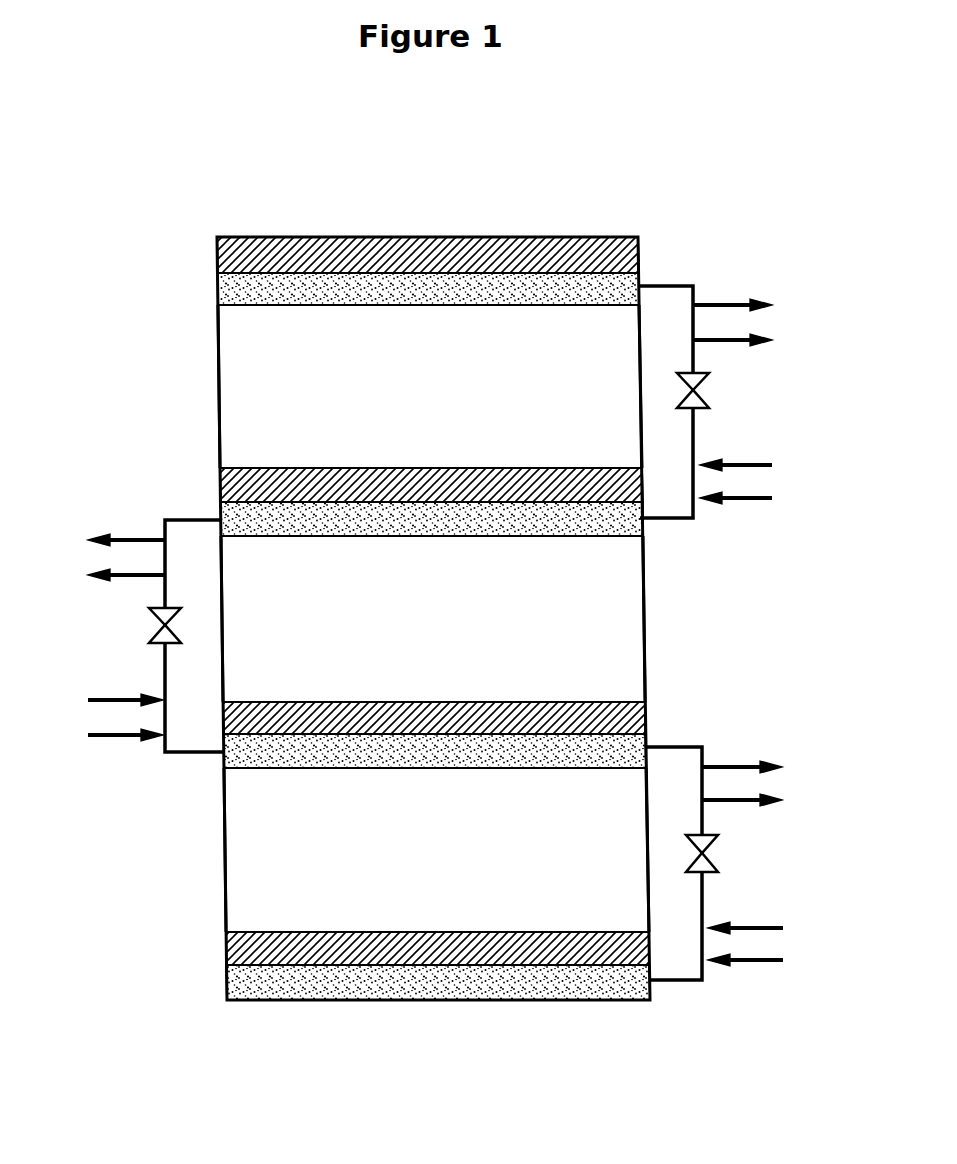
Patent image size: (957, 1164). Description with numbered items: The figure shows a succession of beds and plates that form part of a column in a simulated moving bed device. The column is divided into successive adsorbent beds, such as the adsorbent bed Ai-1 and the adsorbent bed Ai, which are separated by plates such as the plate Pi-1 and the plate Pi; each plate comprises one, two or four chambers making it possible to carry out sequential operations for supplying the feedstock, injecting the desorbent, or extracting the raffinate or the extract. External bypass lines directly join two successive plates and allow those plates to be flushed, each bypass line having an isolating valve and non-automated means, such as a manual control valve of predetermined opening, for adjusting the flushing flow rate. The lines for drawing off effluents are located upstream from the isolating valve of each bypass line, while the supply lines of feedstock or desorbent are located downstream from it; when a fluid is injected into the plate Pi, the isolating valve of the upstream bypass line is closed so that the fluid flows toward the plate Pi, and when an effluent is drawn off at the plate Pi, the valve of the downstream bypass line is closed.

The plate Pi-1 is at (428, 271).
The adsorbent bed Ai-1 is at (430, 386).
The plate Pi is at (431, 502).
The adsorbent bed Ai is at (433, 619).